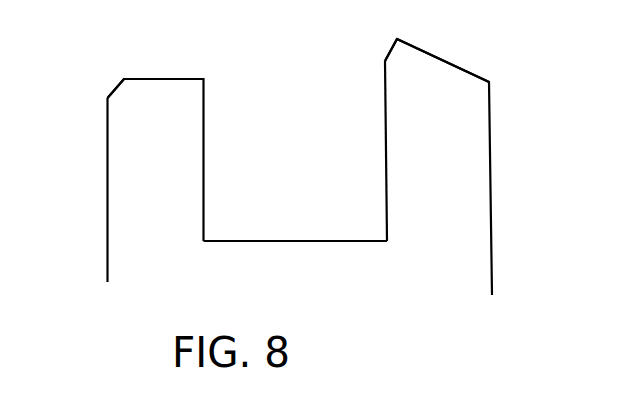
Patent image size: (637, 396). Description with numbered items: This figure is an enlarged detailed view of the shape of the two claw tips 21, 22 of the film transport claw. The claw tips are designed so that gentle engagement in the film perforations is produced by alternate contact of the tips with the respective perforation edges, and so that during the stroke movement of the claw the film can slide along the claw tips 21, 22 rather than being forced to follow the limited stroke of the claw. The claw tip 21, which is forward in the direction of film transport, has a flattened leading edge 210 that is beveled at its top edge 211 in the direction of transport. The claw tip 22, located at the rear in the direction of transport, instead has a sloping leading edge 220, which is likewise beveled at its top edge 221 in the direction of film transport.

The claw tip 21 is at (200, 152).
The flattened leading edge 210 is at (175, 75).
The top edge 211 is at (116, 91).
The claw tip 22 is at (485, 133).
The sloping leading edge 220 is at (437, 57).
The top edge 221 is at (390, 53).